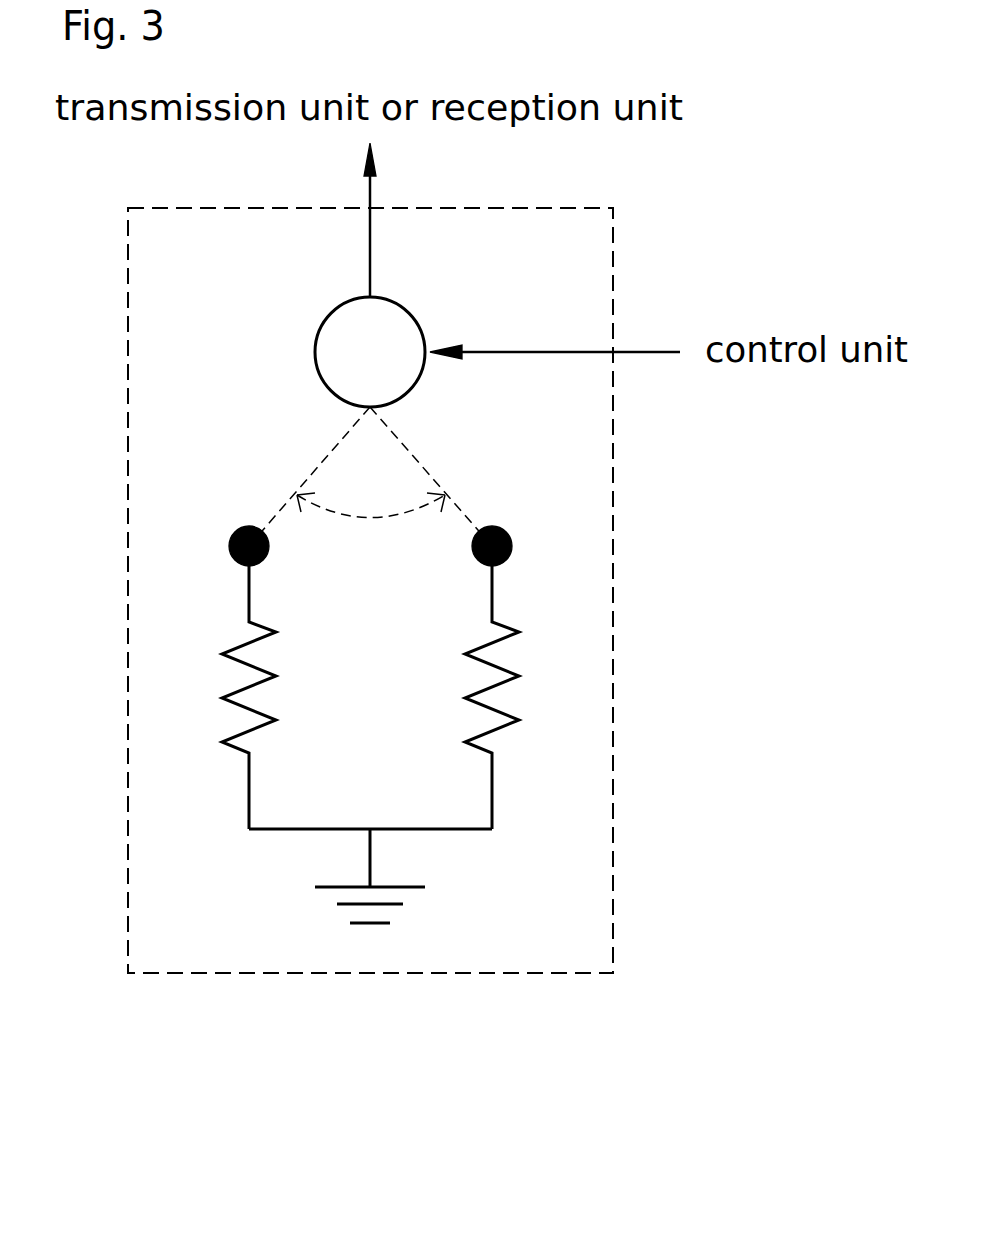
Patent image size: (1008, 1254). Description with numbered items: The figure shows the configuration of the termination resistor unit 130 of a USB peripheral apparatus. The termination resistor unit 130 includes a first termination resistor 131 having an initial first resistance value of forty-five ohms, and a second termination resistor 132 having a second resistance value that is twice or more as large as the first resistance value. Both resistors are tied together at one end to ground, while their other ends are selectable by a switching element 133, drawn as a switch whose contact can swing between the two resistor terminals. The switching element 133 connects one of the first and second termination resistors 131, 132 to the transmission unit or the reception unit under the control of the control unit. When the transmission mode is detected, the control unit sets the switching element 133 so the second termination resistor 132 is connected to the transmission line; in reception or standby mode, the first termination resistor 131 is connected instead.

The termination resistor unit 130 is at (389, 973).
The first termination resistor 131 is at (222, 654).
The second termination resistor 132 is at (519, 632).
The switching element 133 is at (315, 352).